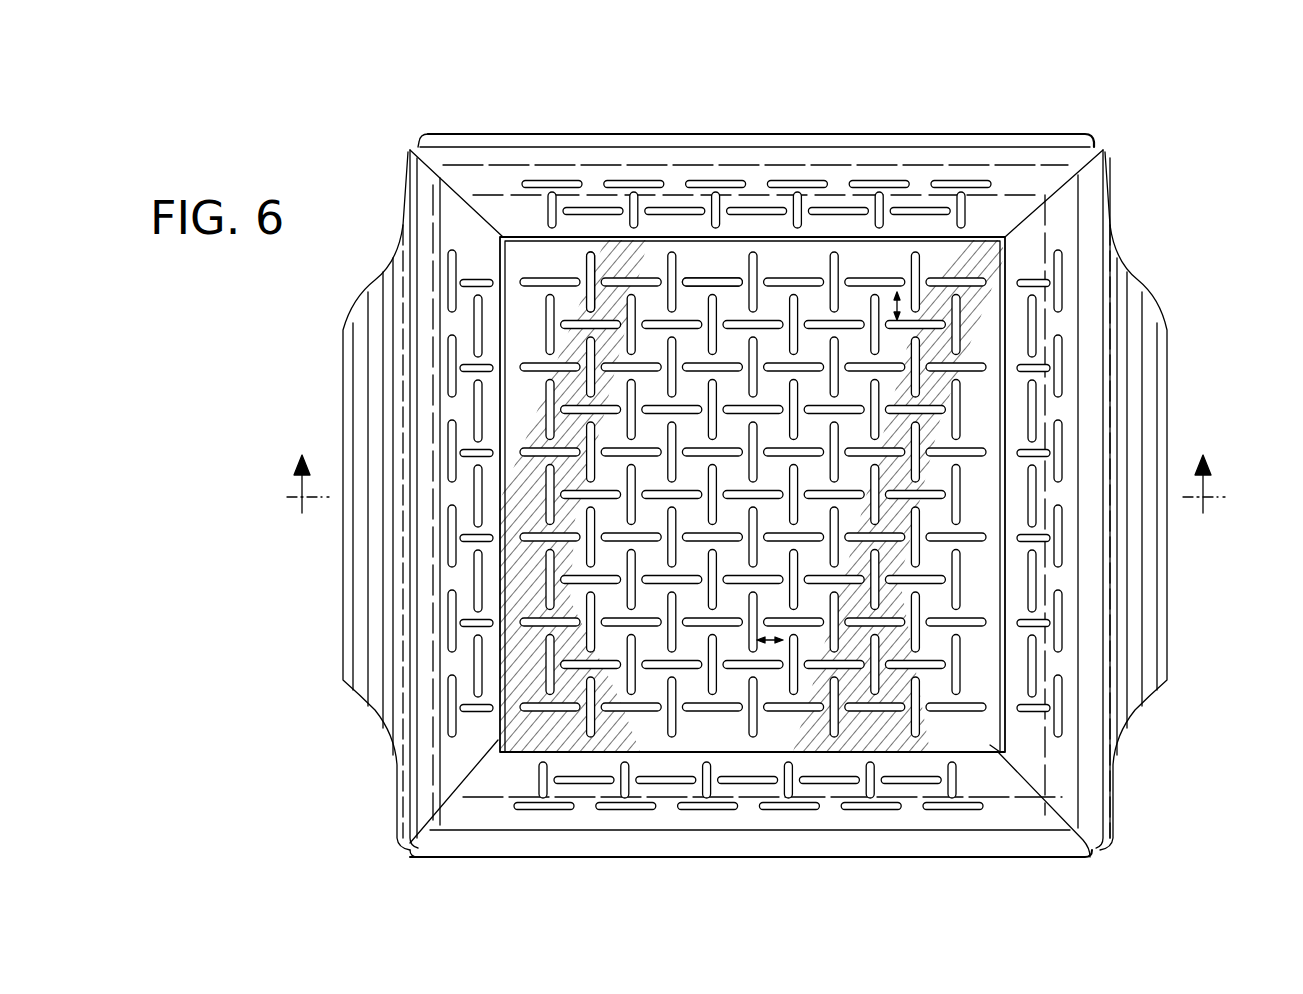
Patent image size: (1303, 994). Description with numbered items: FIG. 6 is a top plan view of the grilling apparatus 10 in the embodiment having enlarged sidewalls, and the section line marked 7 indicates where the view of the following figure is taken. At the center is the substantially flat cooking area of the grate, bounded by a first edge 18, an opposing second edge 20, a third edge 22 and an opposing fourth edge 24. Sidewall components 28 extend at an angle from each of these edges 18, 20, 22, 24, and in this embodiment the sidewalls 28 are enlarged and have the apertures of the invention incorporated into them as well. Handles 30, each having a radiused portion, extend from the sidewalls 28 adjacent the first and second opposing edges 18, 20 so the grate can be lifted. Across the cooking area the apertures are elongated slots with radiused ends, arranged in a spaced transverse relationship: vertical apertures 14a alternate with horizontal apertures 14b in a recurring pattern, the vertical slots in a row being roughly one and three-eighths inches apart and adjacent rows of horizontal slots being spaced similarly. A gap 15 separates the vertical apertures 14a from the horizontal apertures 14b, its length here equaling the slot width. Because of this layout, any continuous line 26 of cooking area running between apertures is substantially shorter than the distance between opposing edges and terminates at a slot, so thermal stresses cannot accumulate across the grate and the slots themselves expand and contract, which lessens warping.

The grilling apparatus 10 is at (760, 471).
The vertical apertures 14a is at (585, 267).
The horizontal apertures 14b is at (700, 278).
The gap 15 is at (907, 372).
The first edge 18 is at (497, 738).
The second edge 20 is at (896, 290).
The third edge 22 is at (1000, 612).
The fourth edge 24 is at (982, 755).
The continuous line 26 is at (905, 302).
The sidewall components 28 is at (747, 136).
The handles 30 is at (343, 376).
The section line 7- 7 is at (756, 494).